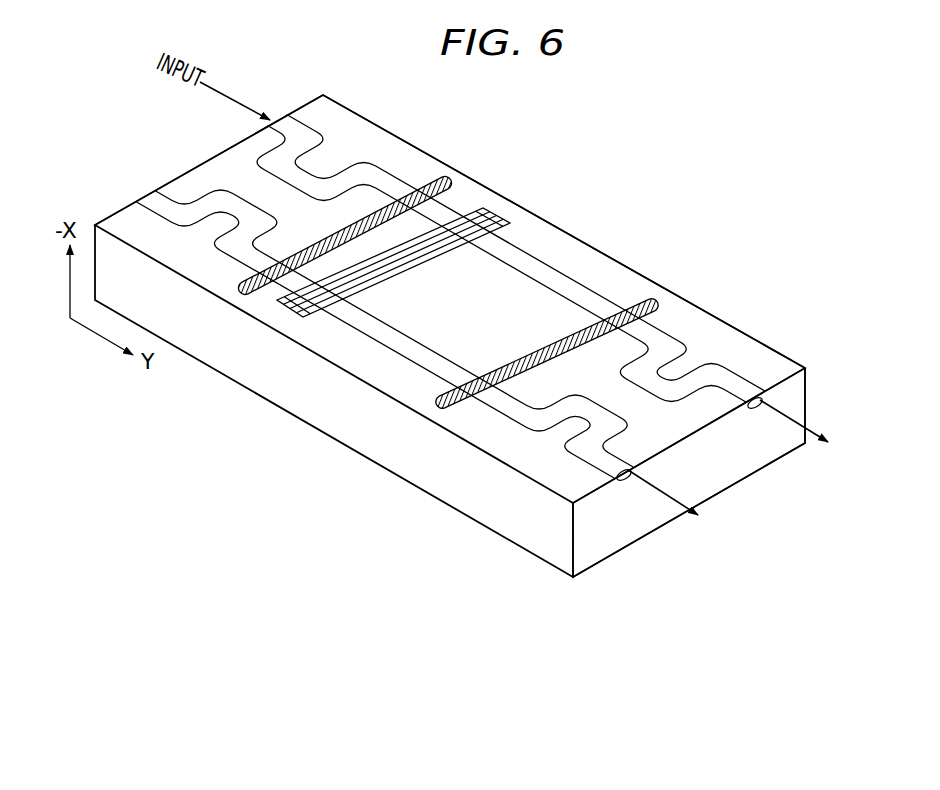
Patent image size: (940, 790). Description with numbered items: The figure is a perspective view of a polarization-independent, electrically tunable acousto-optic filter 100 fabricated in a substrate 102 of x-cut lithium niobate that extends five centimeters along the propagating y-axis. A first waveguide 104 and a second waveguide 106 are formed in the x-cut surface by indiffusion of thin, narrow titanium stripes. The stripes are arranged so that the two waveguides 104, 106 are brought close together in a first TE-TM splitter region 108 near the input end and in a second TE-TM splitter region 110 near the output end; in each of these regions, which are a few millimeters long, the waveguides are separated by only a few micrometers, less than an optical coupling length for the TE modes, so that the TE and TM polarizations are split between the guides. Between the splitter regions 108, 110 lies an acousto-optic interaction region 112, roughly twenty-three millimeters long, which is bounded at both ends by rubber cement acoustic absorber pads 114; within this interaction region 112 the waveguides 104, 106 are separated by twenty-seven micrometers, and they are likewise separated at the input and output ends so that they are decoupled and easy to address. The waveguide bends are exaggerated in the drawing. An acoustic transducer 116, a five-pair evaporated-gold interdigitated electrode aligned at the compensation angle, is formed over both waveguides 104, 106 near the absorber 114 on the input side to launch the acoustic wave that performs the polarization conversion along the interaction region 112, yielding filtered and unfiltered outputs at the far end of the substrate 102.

The polarization-independent, electrically tunable acousto-optic filter 100 is at (357, 442).
The substrate 102 is at (700, 489).
The first waveguide 104 is at (747, 388).
The second waveguide 106 is at (613, 466).
The first TE-TM splitter region 108 is at (323, 118).
The second TE-TM splitter region 110 is at (688, 331).
The acousto-optic interaction region 112 is at (582, 255).
The acoustic absorber pads 114 is at (440, 184).
The acoustic transducer 116 is at (497, 215).